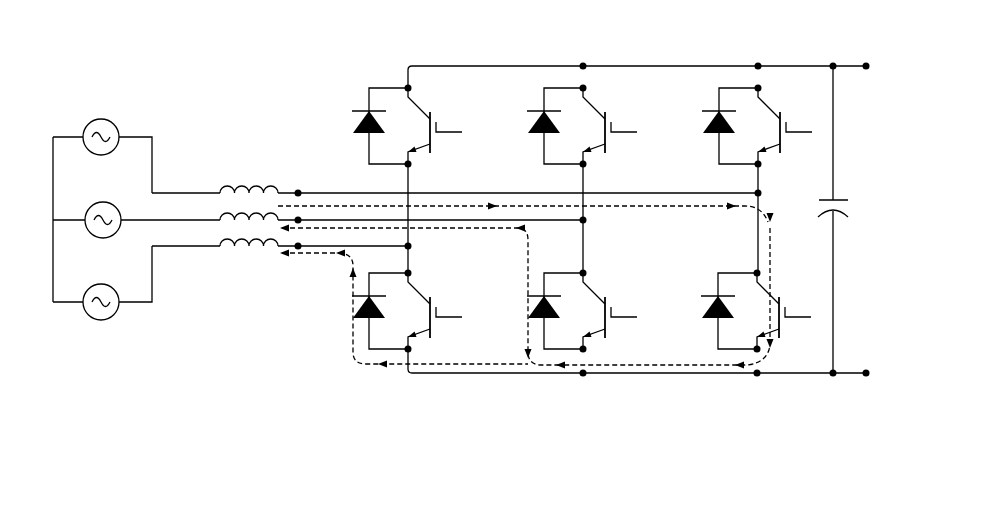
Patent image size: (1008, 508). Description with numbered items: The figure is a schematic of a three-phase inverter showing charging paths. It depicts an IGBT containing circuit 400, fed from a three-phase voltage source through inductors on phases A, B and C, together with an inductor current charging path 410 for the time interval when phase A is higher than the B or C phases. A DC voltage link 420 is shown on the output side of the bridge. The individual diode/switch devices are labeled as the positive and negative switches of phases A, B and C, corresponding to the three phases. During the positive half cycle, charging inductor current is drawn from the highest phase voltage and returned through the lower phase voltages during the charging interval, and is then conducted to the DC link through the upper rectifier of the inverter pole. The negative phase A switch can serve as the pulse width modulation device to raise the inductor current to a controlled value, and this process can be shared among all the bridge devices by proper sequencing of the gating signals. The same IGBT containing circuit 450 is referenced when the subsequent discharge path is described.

The IGBT containing circuit 400 is at (461, 252).
The inductor current charging path 410 is at (594, 219).
The DC voltage link 420 is at (870, 219).
The IGBT containing circuit 450 is at (526, 355).